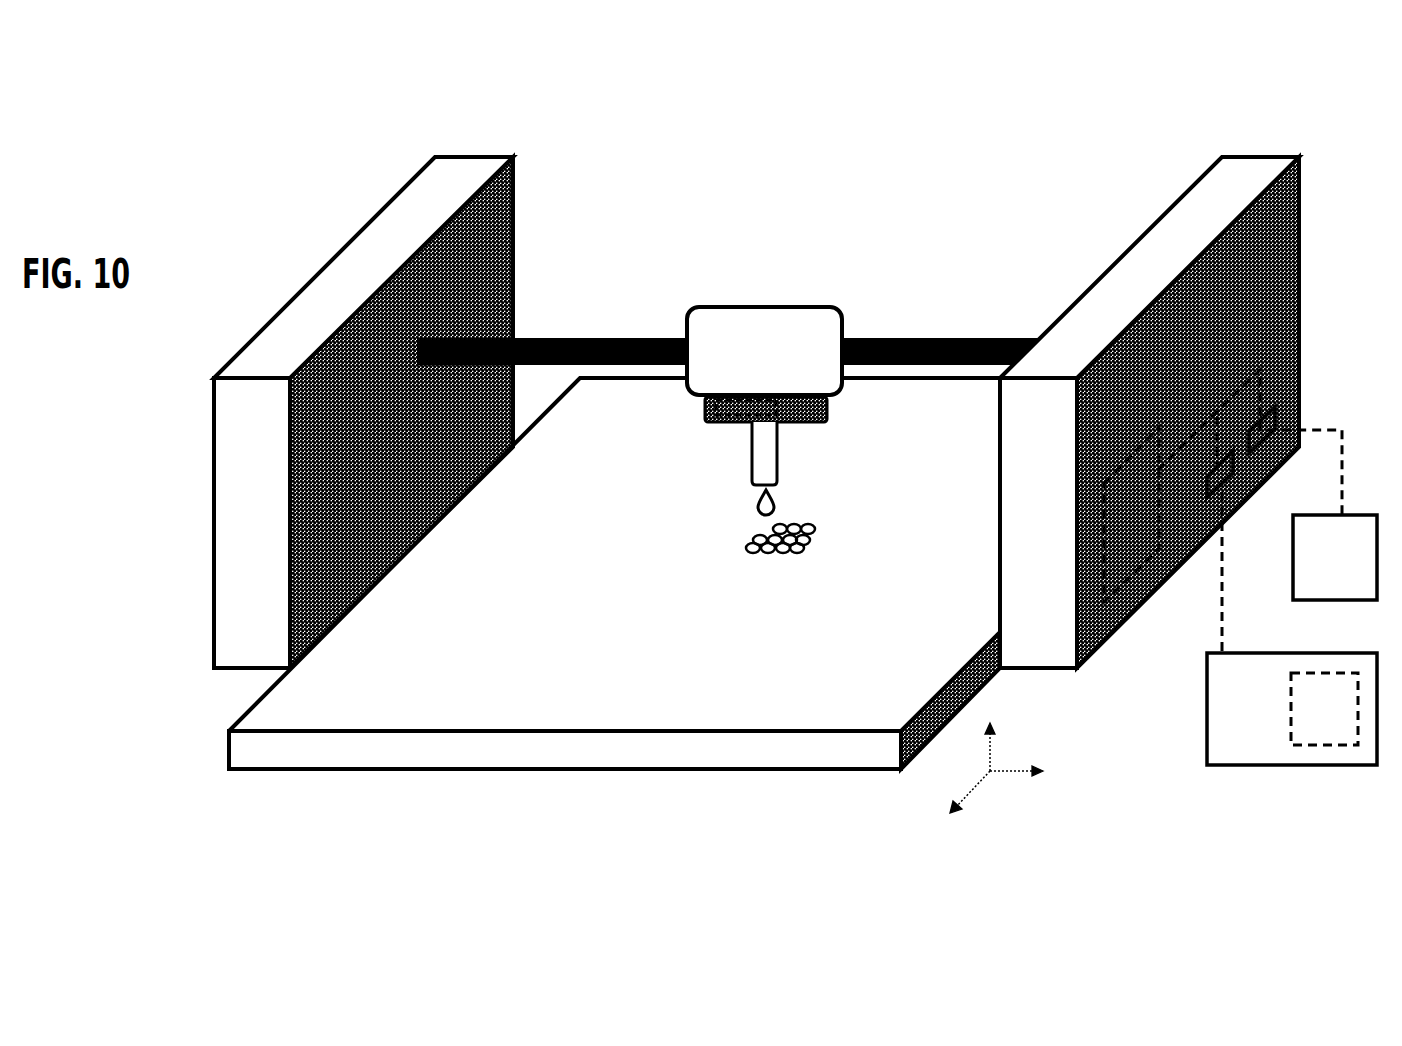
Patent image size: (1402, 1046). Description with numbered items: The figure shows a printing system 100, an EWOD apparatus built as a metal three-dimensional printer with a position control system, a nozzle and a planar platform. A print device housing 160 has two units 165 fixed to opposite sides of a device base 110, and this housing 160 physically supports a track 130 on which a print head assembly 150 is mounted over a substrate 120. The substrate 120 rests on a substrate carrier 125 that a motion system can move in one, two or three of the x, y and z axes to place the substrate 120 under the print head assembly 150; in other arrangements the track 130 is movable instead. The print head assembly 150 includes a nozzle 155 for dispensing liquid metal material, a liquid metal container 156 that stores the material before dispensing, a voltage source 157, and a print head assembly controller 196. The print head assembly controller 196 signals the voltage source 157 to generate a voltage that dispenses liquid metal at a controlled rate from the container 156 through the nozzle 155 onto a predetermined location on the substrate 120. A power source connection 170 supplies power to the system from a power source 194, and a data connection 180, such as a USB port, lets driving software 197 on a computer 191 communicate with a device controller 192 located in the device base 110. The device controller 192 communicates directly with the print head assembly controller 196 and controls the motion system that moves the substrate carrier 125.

The printing system 100 is at (140, 193).
The device base 110 is at (580, 596).
The substrate 120 is at (302, 694).
The substrate carrier 125 is at (245, 748).
The track 130 is at (880, 338).
The print head assembly 150 is at (793, 380).
The nozzle 155 is at (760, 448).
The liquid metal container 156 is at (715, 307).
The voltage source 157 is at (830, 408).
The print device housing 160 is at (228, 434).
The units 165 is at (245, 518).
The power source connection 170 is at (1262, 414).
The data connection 180 is at (1217, 498).
The computer 191 is at (1246, 709).
The device controller 192 is at (1133, 620).
The power source 194 is at (1335, 557).
The print head assembly controller 196 is at (700, 411).
The driving software 197 is at (1324, 709).